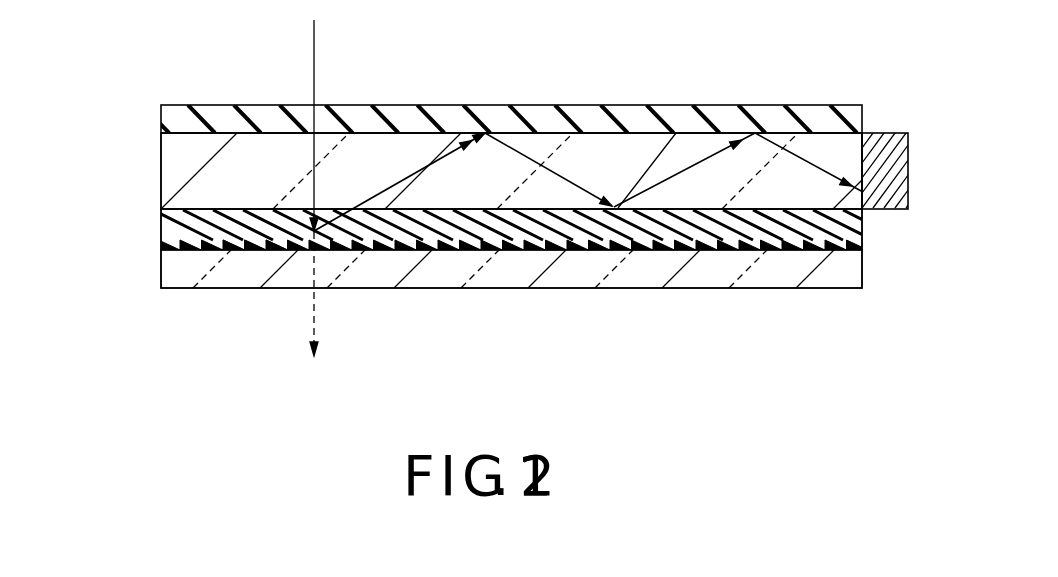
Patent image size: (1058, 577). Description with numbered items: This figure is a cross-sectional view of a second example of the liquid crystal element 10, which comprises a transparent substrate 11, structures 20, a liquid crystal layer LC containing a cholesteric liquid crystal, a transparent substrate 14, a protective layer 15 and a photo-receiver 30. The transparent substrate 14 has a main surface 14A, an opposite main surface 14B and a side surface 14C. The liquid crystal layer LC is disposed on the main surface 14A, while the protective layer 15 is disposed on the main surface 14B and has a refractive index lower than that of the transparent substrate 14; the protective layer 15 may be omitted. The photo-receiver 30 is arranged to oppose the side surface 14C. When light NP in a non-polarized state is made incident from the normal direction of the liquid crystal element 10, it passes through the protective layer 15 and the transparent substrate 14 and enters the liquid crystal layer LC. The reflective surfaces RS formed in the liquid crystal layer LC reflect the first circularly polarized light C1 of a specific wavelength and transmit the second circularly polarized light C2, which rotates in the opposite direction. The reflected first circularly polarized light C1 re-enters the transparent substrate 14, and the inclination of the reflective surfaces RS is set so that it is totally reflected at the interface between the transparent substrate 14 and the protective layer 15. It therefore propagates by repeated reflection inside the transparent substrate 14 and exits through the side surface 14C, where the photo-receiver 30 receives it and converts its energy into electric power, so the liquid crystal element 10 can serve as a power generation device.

The liquid crystal element 10 is at (108, 250).
The transparent substrate 11 is at (168, 267).
The transparent substrate 14 is at (168, 172).
The main surface 14A is at (700, 222).
The main surface 14B is at (600, 120).
The side surface 14C is at (880, 160).
The protective layer 15 is at (180, 122).
The structures 20 is at (209, 250).
The photo-receiver 30 is at (908, 188).
The liquid crystal layer LC is at (168, 223).
The reflective surfaces RS is at (275, 250).
The light in a non-polarized state NP is at (312, 49).
The first circularly polarized light C1 is at (404, 180).
The second circularly polarized light C2 is at (317, 300).